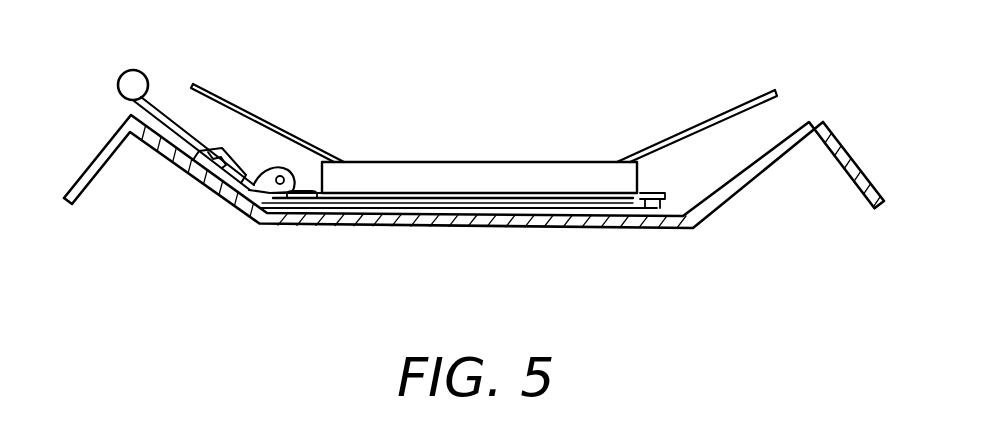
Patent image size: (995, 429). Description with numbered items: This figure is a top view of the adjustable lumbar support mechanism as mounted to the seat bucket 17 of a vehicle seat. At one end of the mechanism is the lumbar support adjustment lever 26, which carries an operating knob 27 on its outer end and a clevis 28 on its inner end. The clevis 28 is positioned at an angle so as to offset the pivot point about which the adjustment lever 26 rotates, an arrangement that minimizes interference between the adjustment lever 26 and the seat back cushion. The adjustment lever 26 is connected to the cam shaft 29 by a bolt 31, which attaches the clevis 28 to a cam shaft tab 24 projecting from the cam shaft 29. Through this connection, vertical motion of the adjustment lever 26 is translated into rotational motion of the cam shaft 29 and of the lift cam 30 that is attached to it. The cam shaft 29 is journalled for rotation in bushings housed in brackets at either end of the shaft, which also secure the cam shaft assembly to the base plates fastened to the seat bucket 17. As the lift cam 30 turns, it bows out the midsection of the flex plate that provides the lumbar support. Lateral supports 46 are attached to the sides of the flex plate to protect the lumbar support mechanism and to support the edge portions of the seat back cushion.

The seat bucket 17 is at (848, 152).
The cam shaft tab 24 is at (300, 213).
The adjustment lever 26 is at (164, 112).
The operating knob 27 is at (123, 77).
The clevis 28 is at (235, 205).
The cam shaft 29 is at (438, 229).
The lift cam 30 is at (552, 188).
The bolt 31 is at (262, 226).
The lateral supports 46 is at (263, 119).